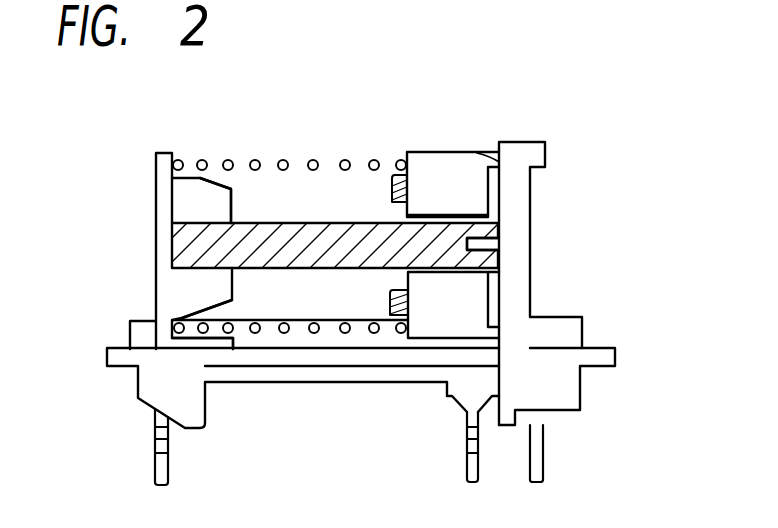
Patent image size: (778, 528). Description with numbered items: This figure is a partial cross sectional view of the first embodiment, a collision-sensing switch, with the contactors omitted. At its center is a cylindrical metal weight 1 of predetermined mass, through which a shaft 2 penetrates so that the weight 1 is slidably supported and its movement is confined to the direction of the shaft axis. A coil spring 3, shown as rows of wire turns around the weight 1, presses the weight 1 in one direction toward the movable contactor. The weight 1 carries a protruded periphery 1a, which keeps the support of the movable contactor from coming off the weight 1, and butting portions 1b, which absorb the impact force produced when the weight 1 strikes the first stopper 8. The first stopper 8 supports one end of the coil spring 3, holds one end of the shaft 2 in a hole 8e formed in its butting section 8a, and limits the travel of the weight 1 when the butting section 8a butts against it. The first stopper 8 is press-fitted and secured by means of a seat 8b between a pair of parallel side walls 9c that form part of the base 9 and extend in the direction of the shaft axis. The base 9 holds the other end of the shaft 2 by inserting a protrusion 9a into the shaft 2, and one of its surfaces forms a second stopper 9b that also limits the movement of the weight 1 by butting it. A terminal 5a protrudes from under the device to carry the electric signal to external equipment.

The metal weight 1 is at (437, 151).
The protruded periphery 1a is at (490, 152).
The butting portion 1b is at (389, 176).
The shaft 2 is at (285, 224).
The coil spring 3 is at (231, 159).
The terminal 5a is at (540, 443).
The first stopper 8 is at (168, 152).
The butting section 8a is at (233, 190).
The seat 8b is at (215, 342).
The hole 8e is at (203, 222).
The base 9 is at (113, 360).
The protrusion 9a is at (495, 245).
The second stopper 9b is at (500, 142).
The side walls 9c is at (233, 318).